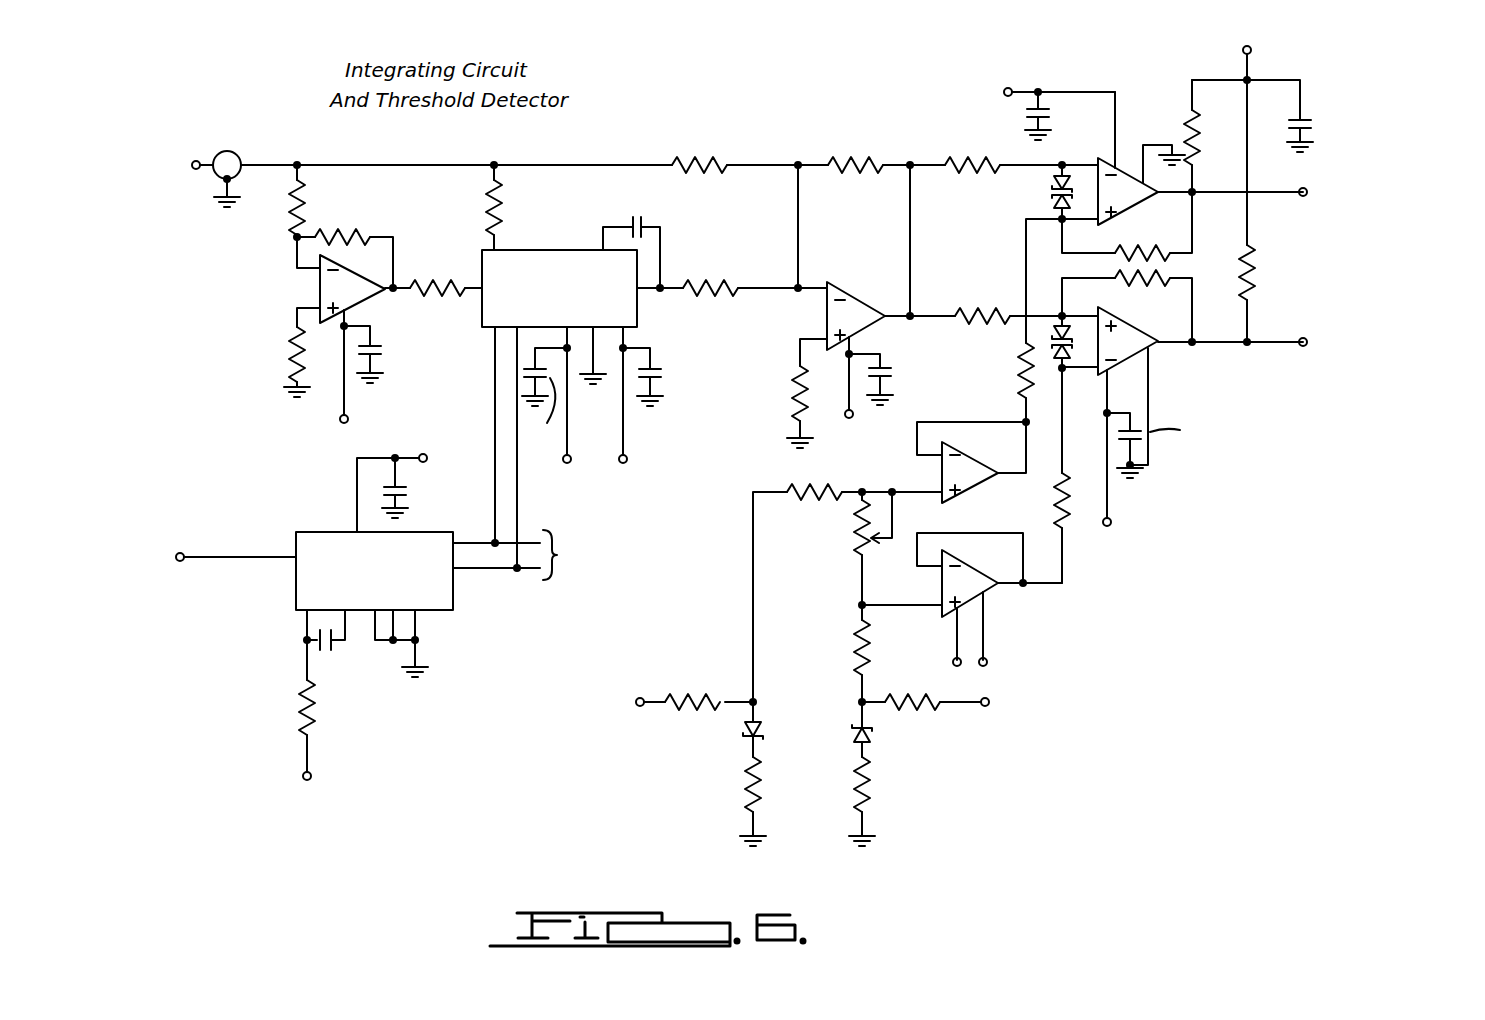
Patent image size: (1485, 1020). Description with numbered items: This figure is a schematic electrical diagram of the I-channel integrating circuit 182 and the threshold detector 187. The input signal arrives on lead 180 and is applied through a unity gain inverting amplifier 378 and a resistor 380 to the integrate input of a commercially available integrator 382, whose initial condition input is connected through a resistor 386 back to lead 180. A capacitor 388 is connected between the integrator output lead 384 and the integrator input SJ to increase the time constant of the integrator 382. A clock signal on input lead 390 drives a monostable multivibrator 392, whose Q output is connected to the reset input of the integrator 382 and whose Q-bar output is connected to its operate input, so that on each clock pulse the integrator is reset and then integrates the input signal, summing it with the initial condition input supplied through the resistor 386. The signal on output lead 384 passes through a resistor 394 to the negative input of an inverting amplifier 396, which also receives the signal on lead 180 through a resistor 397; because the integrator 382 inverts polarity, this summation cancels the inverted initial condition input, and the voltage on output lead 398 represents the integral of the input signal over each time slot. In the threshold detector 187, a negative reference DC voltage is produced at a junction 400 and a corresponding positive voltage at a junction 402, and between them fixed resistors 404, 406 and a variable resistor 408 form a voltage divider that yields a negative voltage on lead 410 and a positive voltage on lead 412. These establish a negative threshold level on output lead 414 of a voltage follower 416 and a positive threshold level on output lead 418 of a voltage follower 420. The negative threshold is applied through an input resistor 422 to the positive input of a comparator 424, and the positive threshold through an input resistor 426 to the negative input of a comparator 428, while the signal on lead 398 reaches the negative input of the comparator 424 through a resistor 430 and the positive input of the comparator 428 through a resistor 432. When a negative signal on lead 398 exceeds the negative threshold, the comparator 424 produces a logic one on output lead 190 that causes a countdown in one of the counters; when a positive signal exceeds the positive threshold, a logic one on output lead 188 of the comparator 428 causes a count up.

The signal input lead 180 is at (191, 165).
The integrating circuit 182 is at (596, 433).
The threshold detector 187 is at (1011, 442).
The output lead 188 is at (1284, 347).
The output lead 190 is at (1215, 198).
The unity gain inverting amplifier 378 is at (320, 288).
The resistor 380 is at (457, 292).
The integrator 382 is at (547, 258).
The output lead 384 is at (677, 295).
The resistor 386 is at (487, 203).
The capacitor 388 is at (650, 241).
The input lead 390 is at (223, 555).
The monostable multivibrator 392 is at (312, 532).
The resistor 394 is at (723, 293).
The inverting amplifier 396 is at (826, 320).
The resistor 397 is at (738, 168).
The output lead 398 is at (893, 308).
The junction 400 is at (758, 706).
The junction 402 is at (865, 696).
The fixed resistor 404 is at (853, 632).
The fixed resistor 406 is at (815, 498).
The variable resistor 408 is at (858, 548).
The lead 410 is at (913, 495).
The lead 412 is at (899, 605).
The output lead 414 is at (1023, 407).
The voltage follower 416 is at (982, 472).
The output lead 418 is at (1063, 569).
The voltage follower 420 is at (982, 579).
The input resistor 422 is at (1020, 361).
The comparator 424 is at (1127, 177).
The input resistor 426 is at (1055, 521).
The comparator 428 is at (1152, 348).
The resistor 430 is at (962, 175).
The resistor 432 is at (955, 302).